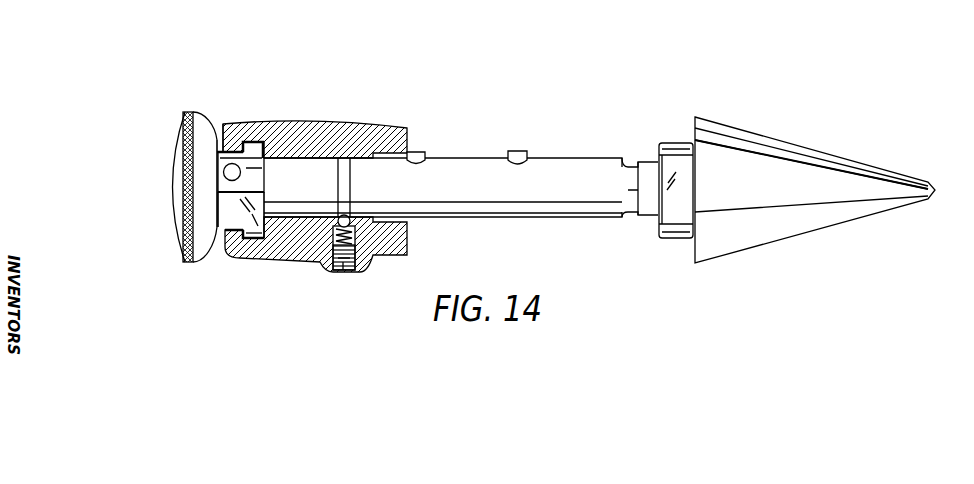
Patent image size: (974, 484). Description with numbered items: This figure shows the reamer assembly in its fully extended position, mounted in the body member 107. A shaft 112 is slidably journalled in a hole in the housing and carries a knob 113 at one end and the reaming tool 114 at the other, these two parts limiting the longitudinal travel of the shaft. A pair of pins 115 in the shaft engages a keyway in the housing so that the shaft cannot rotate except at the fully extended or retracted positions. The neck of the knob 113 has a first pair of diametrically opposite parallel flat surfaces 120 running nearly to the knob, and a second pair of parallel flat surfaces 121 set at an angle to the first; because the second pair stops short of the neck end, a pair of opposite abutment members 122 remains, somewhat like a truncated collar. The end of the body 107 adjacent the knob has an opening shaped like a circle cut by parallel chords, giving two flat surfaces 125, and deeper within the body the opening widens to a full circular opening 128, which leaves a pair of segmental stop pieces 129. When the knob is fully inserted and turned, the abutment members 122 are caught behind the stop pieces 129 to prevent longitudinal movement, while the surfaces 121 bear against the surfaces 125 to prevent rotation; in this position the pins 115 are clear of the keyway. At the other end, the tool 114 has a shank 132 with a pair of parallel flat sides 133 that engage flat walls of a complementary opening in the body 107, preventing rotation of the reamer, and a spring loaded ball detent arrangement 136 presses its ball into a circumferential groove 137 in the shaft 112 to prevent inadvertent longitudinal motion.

The body member 107 is at (334, 126).
The shaft 112 is at (480, 173).
The knob 113 is at (170, 158).
The reaming tool 114 is at (768, 238).
The pins 115 is at (418, 152).
The parallel flat surfaces 120 is at (258, 222).
The parallel flat surfaces 121 is at (218, 150).
The abutment members 122 is at (254, 141).
The flat surfaces 125 is at (228, 151).
The full circular opening 128 is at (253, 243).
The segmental stop pieces 129 is at (231, 147).
The shank 132 is at (673, 143).
The parallel flat sides 133 is at (678, 212).
The spring loaded ball detent arrangement 136 is at (343, 272).
The circumferential groove 137 is at (348, 173).